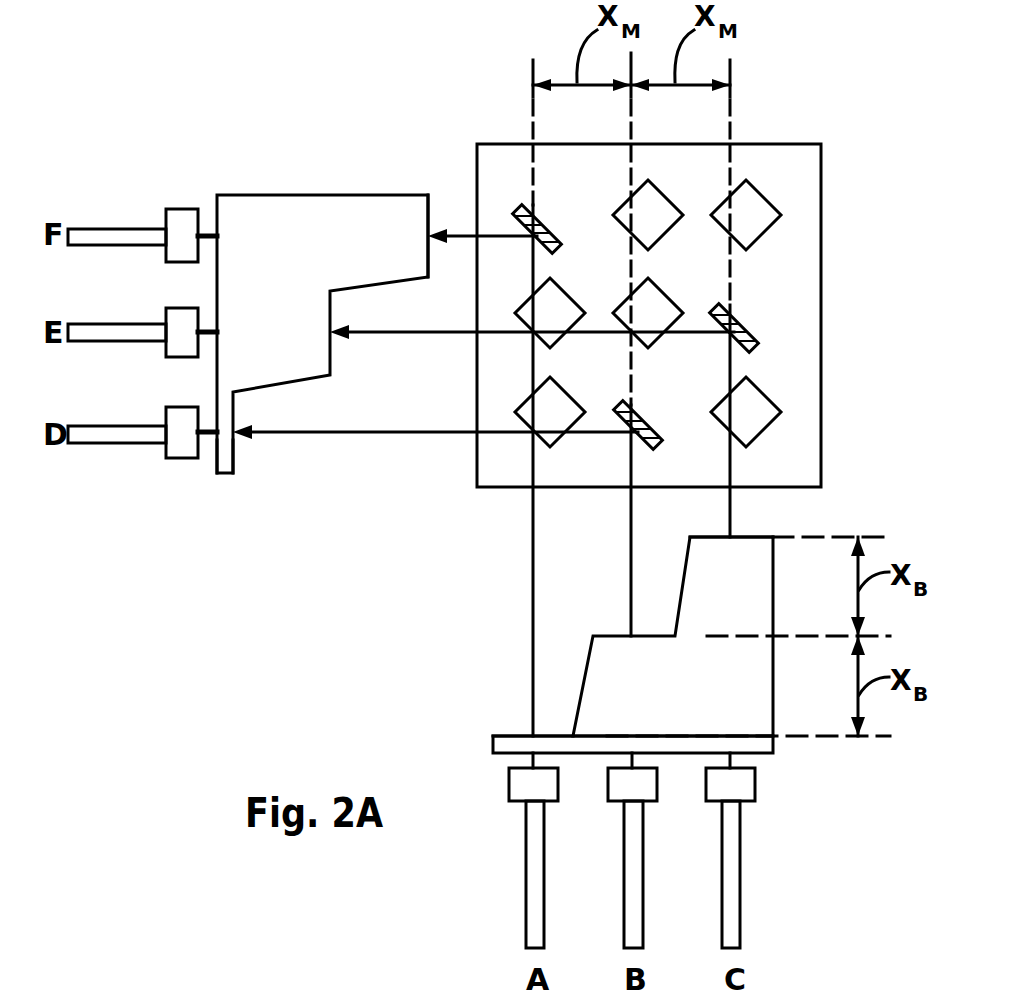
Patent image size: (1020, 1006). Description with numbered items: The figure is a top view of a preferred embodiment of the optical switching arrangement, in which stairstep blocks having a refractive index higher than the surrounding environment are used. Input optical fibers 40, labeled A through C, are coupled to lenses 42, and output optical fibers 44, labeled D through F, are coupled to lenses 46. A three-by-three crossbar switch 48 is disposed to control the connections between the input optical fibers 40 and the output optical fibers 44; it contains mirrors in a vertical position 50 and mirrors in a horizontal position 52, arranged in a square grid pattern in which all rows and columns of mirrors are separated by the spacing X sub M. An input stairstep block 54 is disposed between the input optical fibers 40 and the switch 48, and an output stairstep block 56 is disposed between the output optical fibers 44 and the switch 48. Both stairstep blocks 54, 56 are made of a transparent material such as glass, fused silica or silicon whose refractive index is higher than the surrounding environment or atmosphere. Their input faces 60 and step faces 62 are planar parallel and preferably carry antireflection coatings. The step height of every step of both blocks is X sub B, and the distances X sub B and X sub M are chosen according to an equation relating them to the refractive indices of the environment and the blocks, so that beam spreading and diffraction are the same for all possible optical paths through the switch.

The input optical fibers 40 is at (526, 897).
The lenses 42 is at (508, 787).
The output optical fibers 44 is at (93, 228).
The lenses 46 is at (184, 209).
The crossbar switch 48 is at (797, 142).
The mirrors in a vertical position 50 is at (522, 203).
The mirrors in a horizontal position 52 is at (753, 200).
The input stairstep block 54 is at (695, 705).
The output stairstep block 56 is at (300, 273).
The input faces 60 is at (217, 465).
The step faces 62 is at (430, 210).